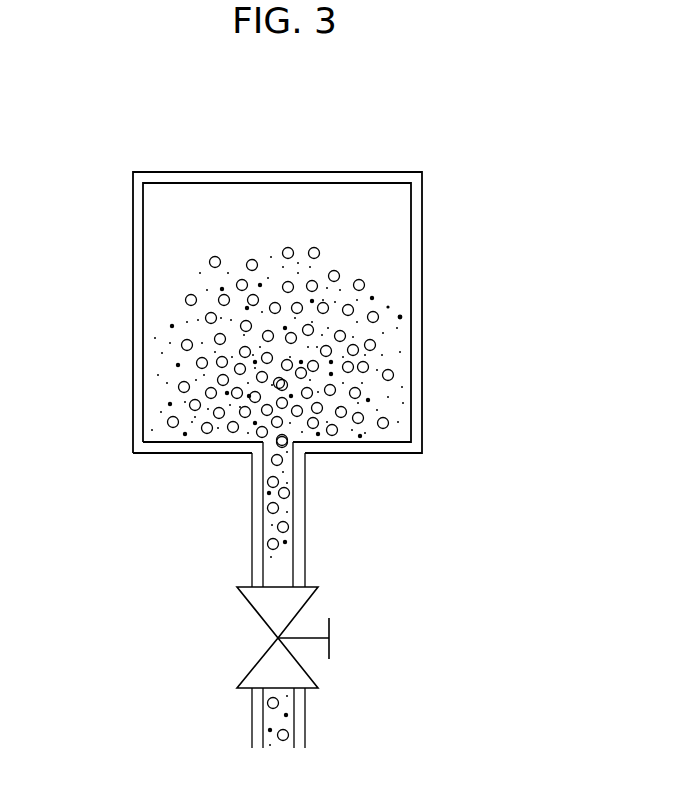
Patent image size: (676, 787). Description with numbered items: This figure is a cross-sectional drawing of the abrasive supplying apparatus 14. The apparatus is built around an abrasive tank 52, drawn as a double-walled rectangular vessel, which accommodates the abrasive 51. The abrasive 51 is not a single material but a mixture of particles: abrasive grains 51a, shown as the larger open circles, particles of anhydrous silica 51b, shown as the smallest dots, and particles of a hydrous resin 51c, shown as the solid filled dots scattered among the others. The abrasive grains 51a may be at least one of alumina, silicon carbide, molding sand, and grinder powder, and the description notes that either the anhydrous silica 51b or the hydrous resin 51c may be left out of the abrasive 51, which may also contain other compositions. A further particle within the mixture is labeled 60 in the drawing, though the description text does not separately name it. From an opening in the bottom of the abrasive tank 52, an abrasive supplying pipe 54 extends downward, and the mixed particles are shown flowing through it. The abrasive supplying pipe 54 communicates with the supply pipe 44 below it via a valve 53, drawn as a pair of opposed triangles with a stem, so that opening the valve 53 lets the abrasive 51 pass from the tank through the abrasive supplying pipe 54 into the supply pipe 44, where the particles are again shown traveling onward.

The abrasive supplying apparatus 14 is at (440, 156).
The abrasive 51 is at (206, 236).
The abrasive grains 51a is at (288, 247).
The anhydrous silica 51b is at (389, 306).
The hydrous resin 51c is at (402, 316).
The abrasive tank 52 is at (422, 243).
The particle 60 is at (388, 366).
The abrasive supplying pipe 54 is at (253, 520).
The valve 53 is at (253, 613).
The supply pipe 44 is at (252, 720).